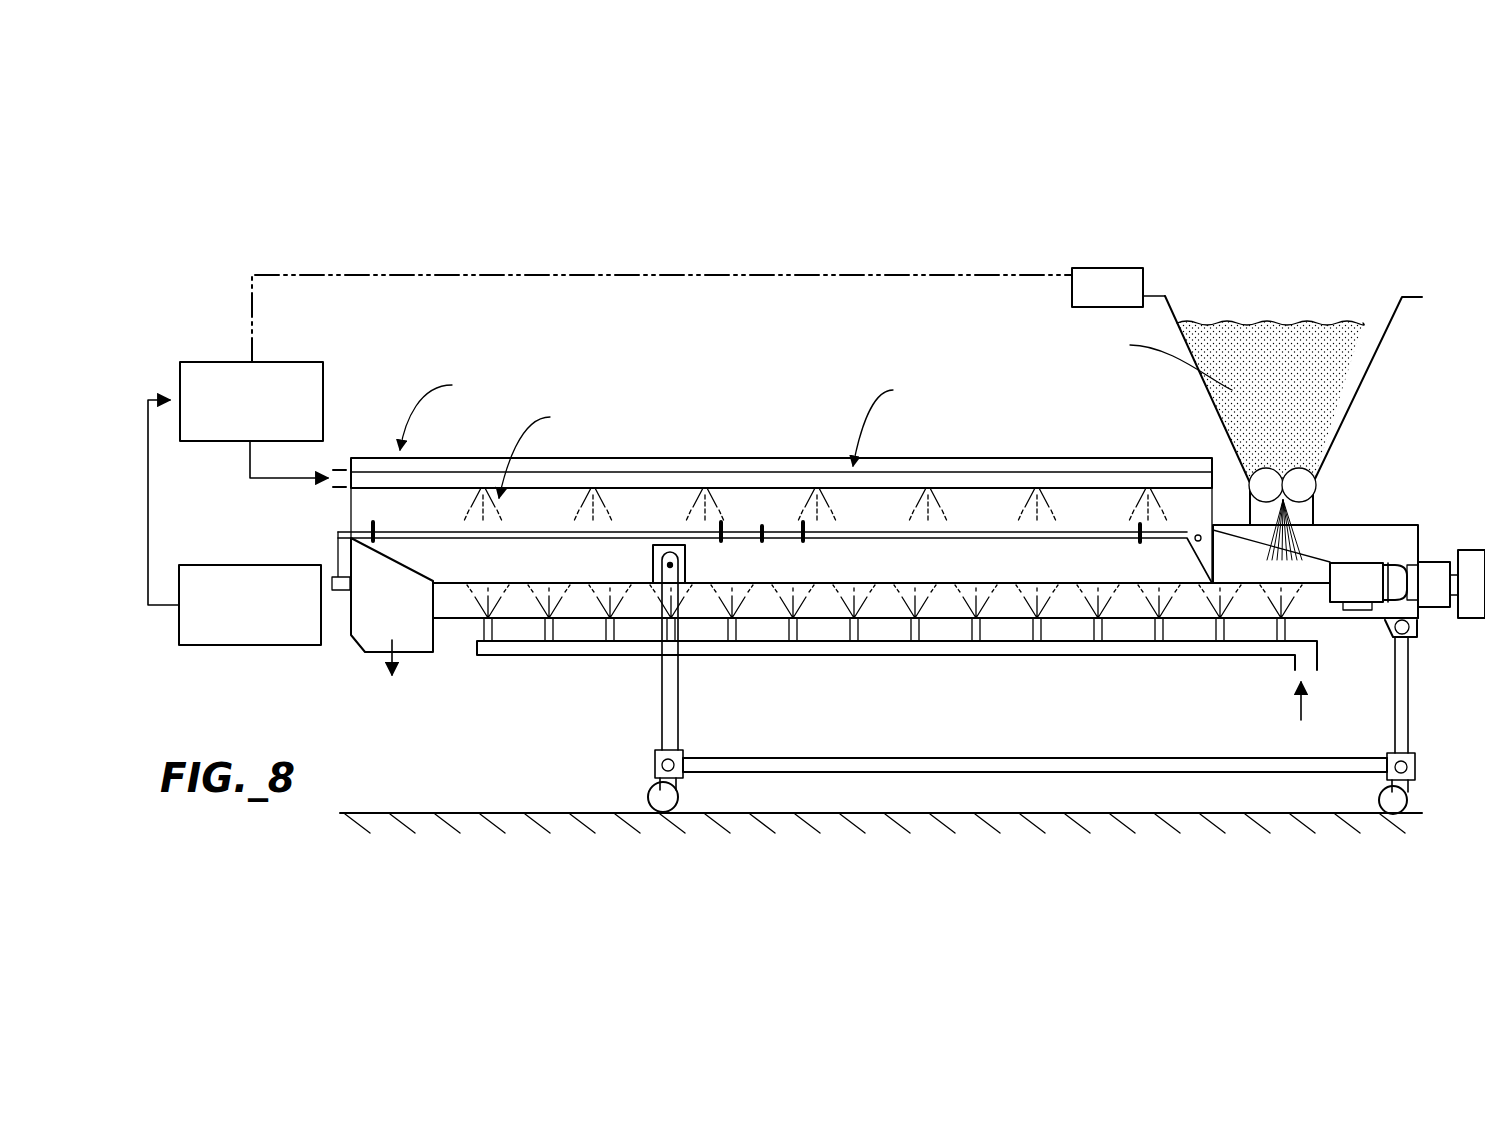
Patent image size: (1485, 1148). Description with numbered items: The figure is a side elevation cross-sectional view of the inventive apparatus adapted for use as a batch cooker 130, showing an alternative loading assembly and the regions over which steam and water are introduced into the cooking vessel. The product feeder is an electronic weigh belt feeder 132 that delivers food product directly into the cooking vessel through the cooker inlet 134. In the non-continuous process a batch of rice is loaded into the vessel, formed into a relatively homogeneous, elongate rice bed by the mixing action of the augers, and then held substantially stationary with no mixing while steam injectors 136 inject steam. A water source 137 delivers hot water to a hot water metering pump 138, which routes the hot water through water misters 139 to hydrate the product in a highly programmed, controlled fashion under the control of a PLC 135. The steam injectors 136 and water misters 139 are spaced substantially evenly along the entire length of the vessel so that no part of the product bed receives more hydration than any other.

The batch cooker 130 is at (898, 519).
The electronic weigh belt feeder 132 is at (1213, 407).
The cooker inlet 134 is at (1325, 543).
The PLC 135 is at (1108, 268).
The steam injectors 136 is at (789, 638).
The water source 137 is at (222, 646).
The hot water metering pump 138 is at (222, 362).
The water misters 139 is at (705, 488).